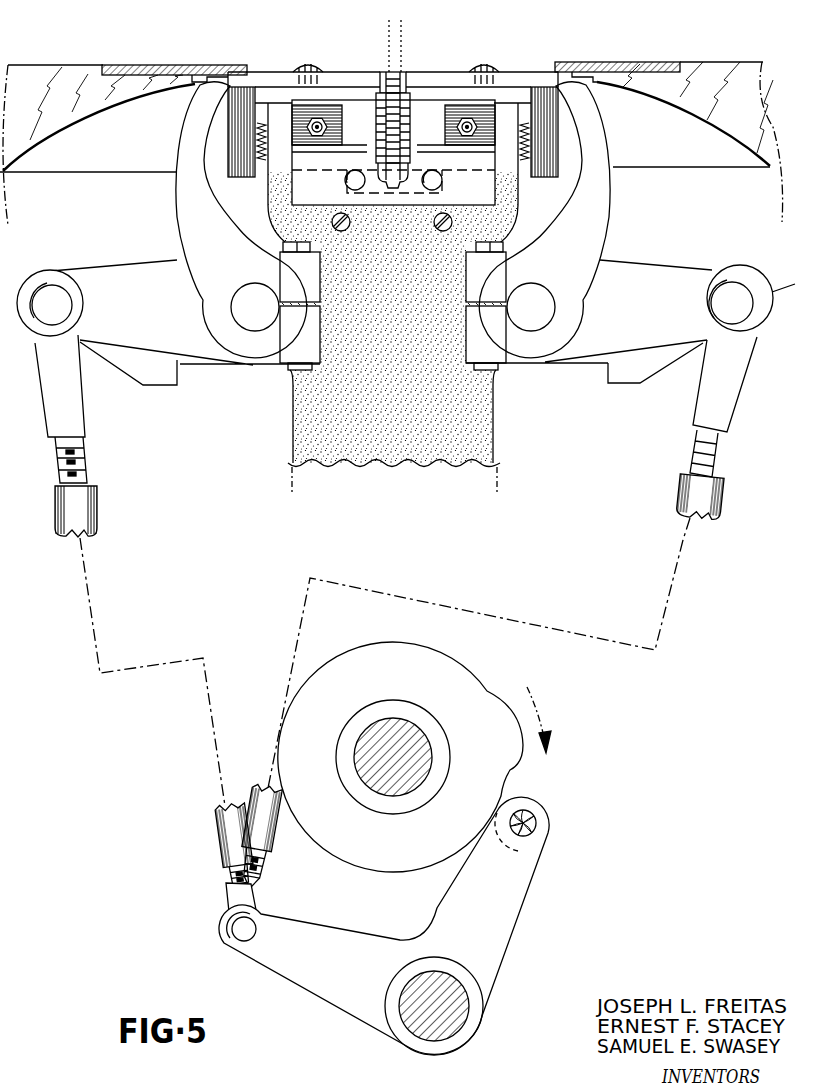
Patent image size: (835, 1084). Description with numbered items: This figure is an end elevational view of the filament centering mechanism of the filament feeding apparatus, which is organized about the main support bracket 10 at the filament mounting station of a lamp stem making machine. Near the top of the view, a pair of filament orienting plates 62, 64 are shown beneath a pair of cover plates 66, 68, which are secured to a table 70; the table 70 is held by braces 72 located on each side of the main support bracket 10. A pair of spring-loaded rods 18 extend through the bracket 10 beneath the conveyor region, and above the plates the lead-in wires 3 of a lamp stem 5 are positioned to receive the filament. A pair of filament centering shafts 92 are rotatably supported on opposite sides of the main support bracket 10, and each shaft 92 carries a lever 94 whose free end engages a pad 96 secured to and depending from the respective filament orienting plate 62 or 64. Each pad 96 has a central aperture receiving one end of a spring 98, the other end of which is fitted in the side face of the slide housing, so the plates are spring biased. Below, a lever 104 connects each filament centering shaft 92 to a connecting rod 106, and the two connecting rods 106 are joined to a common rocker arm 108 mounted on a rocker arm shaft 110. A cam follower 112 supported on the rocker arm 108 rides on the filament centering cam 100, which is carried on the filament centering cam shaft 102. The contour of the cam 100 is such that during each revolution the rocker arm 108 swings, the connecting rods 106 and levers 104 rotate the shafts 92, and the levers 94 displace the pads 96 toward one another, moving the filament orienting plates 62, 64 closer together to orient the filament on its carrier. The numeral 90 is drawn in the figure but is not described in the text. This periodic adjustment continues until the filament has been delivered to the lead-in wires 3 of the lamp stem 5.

The lead-in wires 3 is at (380, 72).
The lamp stem 5 is at (404, 52).
The main support bracket 10 is at (527, 450).
The rods 18 is at (345, 180).
The filament orienting plate 62 is at (340, 72).
The filament orienting plate 64 is at (447, 73).
The cover plate 66 is at (207, 65).
The cover plate 68 is at (643, 62).
The table 70 is at (46, 78).
The braces 72 is at (157, 380).
The pad 90 is at (302, 66).
The filament centering shafts 92 is at (260, 323).
The lever 94 is at (187, 148).
The pad 96 is at (252, 80).
The spring 98 is at (257, 163).
The filament centering cam 100 is at (480, 693).
The filament centering cam shaft 102 is at (423, 780).
The lever 104 is at (128, 282).
The connecting rod 106 is at (95, 497).
The rocker arm 108 is at (505, 915).
The rocker arm shaft 110 is at (458, 1010).
The cam follower 112 is at (550, 820).